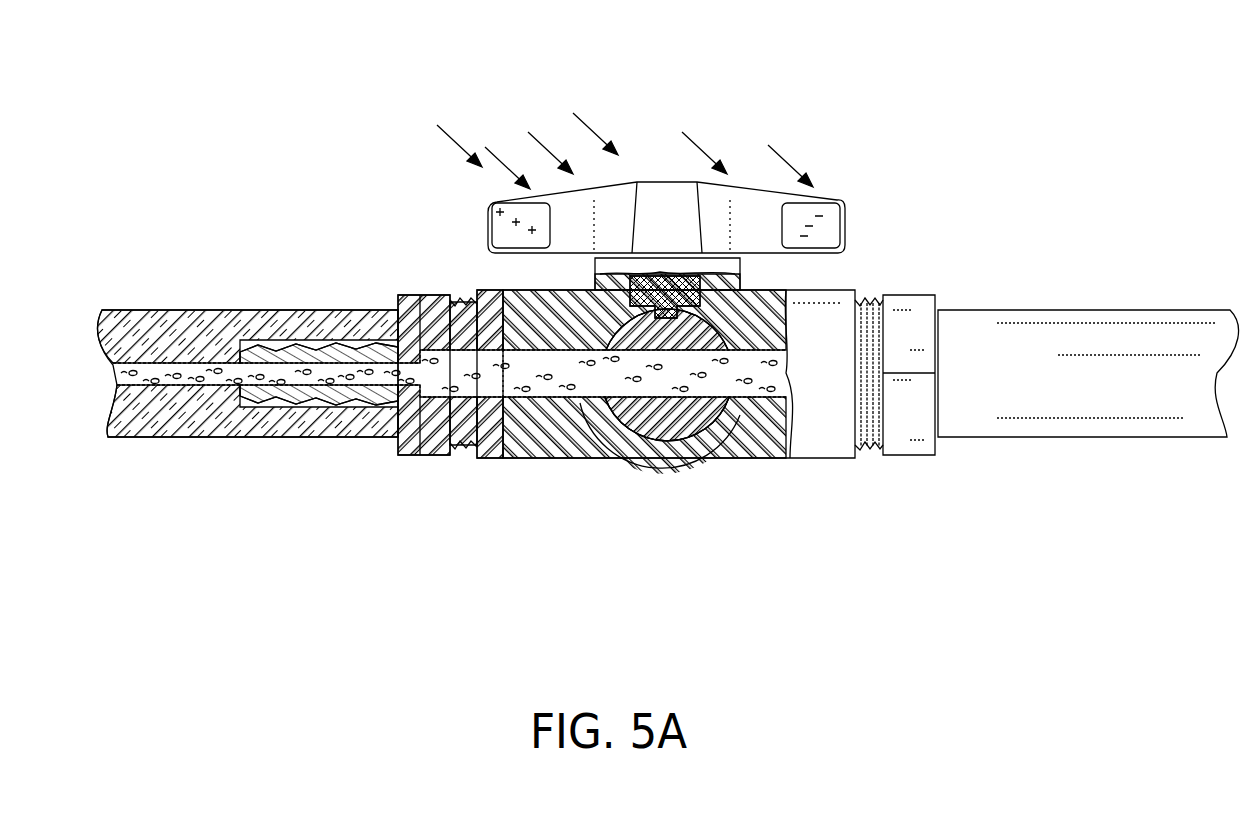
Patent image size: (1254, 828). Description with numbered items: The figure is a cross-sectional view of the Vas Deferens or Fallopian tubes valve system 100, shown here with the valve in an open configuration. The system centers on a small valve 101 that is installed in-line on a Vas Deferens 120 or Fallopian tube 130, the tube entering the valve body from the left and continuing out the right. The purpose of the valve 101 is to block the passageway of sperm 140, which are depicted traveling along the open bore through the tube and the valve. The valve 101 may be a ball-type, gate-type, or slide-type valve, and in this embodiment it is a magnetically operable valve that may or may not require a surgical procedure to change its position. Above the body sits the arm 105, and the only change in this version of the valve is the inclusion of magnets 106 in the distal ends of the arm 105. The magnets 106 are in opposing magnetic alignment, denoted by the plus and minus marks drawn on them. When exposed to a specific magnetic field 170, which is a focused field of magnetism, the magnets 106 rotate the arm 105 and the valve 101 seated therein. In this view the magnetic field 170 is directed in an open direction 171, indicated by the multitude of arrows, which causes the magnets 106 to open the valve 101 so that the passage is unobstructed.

The Vas Deferens or Fallopian tubes valve system 100 is at (734, 288).
The valve 101 is at (726, 443).
The arm 105 is at (765, 254).
The magnets 106 is at (672, 212).
The Vas Deferens 120 is at (248, 320).
The Fallopian tube 130 is at (319, 374).
The sperm 140 is at (590, 380).
The magnetic field 170 is at (672, 127).
The open direction 171 is at (446, 140).